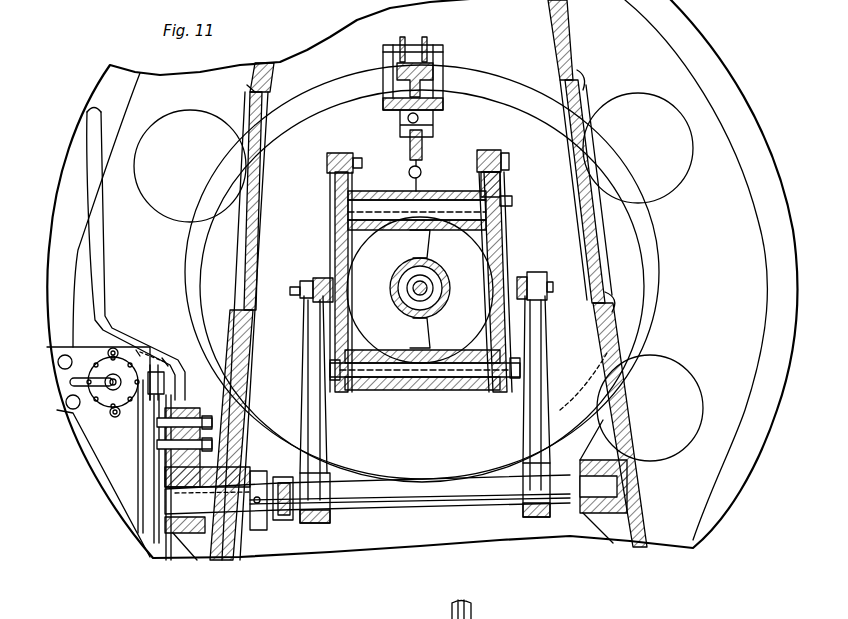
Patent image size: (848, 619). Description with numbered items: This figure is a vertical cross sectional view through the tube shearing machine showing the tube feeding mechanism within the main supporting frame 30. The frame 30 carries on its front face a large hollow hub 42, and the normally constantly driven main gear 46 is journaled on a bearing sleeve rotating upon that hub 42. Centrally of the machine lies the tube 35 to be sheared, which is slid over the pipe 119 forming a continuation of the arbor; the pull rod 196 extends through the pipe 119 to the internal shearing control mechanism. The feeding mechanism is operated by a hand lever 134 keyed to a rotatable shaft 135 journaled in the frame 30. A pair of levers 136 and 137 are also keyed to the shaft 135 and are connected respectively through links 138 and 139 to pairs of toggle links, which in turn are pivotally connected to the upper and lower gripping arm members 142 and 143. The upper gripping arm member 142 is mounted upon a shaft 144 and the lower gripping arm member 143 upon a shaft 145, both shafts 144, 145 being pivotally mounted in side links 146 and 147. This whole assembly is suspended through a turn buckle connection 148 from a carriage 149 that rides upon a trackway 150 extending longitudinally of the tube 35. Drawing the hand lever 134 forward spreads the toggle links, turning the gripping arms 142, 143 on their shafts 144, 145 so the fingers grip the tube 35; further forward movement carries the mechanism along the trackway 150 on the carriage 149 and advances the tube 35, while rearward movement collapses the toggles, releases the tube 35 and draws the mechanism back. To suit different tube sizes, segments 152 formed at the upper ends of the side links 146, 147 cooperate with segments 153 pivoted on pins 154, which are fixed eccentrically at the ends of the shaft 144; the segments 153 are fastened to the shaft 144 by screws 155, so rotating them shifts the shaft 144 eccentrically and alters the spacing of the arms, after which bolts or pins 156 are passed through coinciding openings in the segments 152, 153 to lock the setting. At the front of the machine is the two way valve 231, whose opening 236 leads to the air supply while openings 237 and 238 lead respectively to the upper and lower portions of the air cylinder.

The frame 30 is at (640, 512).
The tube 35 is at (404, 272).
The hollow hub 42 is at (400, 300).
The main gear 46 is at (705, 468).
The pipe 119 is at (402, 288).
The hand lever 134 is at (97, 272).
The rotatable shaft 135 is at (203, 533).
The lever 136 is at (543, 507).
The lever 137 is at (305, 517).
The link 138 is at (320, 278).
The link 139 is at (522, 277).
The upper gripping arm member 142 is at (437, 190).
The lower gripping arm member 143 is at (445, 352).
The shaft 144 is at (450, 206).
The shaft 145 is at (380, 362).
The side link 146 is at (502, 238).
The side link 147 is at (340, 228).
The turn buckle connection 148 is at (425, 158).
The carriage 149 is at (445, 56).
The trackway 150 is at (398, 72).
The segment 152 is at (501, 180).
The segment 153 is at (347, 155).
The pin 154 is at (512, 200).
The screw 155 is at (490, 225).
The bolt or pin 156 is at (509, 160).
The pull rod 196 is at (428, 288).
The two way valve 231 is at (95, 415).
The opening 236 is at (150, 365).
The opening 237 is at (140, 350).
The opening 238 is at (115, 417).